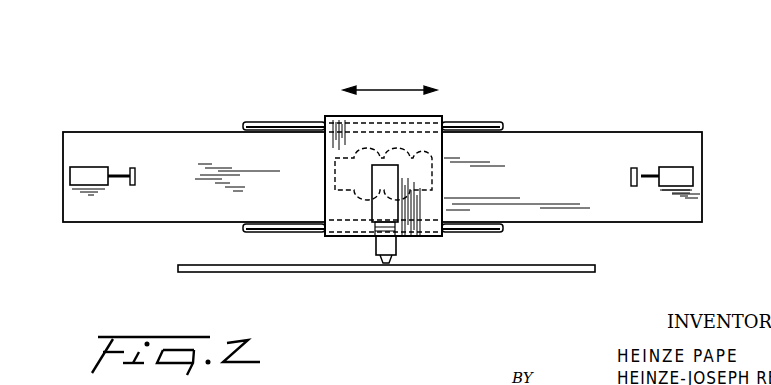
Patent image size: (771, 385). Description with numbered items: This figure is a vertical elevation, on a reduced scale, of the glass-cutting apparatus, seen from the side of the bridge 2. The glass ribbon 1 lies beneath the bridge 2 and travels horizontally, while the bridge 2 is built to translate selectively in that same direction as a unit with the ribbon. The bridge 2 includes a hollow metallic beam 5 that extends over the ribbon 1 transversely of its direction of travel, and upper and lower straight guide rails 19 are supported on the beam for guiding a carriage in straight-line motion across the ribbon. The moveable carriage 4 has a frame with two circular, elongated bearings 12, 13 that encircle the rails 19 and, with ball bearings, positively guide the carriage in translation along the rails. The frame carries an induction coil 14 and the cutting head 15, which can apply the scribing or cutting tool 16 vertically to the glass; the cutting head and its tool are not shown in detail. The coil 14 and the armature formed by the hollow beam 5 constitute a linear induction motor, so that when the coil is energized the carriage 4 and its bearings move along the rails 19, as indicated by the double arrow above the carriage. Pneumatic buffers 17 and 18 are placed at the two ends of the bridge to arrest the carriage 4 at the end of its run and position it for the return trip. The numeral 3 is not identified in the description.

The glass ribbon 1 is at (487, 270).
The bridge 2 is at (538, 145).
The plate strip 3 is at (630, 140).
The carriage 4 is at (444, 116).
The hollow metallic beam 5 is at (138, 223).
The bearing 12 is at (434, 116).
The bearing 13 is at (436, 238).
The induction coil 14 is at (350, 190).
The cutting head 15 is at (373, 173).
The cutting tool 16 is at (386, 263).
The pneumatic buffer 17 is at (680, 176).
The pneumatic buffer 18 is at (95, 170).
The guide rails 19 is at (487, 123).